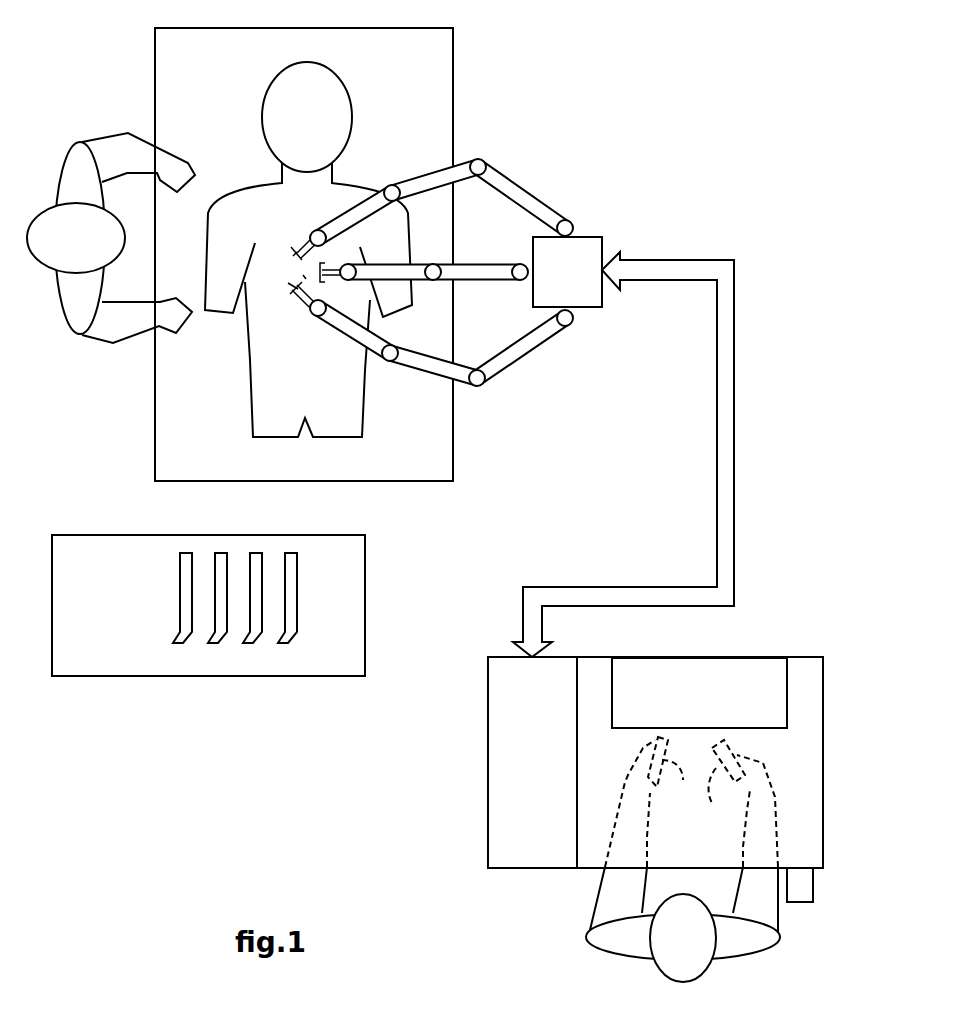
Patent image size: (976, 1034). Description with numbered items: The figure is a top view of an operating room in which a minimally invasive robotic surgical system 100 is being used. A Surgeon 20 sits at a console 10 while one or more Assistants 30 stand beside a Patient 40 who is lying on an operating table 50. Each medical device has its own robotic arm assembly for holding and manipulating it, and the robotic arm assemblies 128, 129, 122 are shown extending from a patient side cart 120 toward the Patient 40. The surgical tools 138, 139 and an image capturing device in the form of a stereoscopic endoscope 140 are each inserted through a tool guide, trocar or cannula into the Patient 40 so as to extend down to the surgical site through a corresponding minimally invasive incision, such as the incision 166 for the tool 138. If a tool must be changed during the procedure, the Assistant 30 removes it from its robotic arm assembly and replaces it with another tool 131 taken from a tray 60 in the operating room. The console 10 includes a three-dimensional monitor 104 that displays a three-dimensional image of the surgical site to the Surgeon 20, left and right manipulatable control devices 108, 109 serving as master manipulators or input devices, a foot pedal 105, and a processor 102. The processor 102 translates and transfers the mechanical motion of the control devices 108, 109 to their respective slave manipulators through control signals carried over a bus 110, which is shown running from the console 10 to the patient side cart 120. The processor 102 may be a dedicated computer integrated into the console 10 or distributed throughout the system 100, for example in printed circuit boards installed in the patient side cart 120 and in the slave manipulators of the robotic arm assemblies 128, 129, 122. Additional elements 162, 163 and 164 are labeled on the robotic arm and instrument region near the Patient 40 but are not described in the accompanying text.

The console 10 is at (798, 657).
The Surgeon 20 is at (737, 960).
The Assistant 30 is at (58, 299).
The Patient 40 is at (252, 186).
The operating table 50 is at (381, 27).
The tray 60 is at (85, 535).
The minimally invasive robotic surgical system 100 is at (652, 107).
The processor 102 is at (550, 773).
The 3-D monitor 104 is at (715, 704).
The foot pedal 105 is at (805, 903).
The left manipulatable control device 108 is at (651, 802).
The right manipulatable control device 109 is at (739, 803).
The bus 110 is at (717, 540).
The patient side cart 120 is at (584, 283).
The robotic arm assembly 122 is at (467, 250).
The robotic arm assembly 128 is at (463, 345).
The robotic arm assembly 129 is at (508, 155).
The tool 131 is at (171, 608).
The surgical tool 138 is at (296, 304).
The surgical tool 139 is at (299, 232).
The stereoscopic endoscope 140 is at (332, 260).
The arm link 162 is at (431, 380).
The arm link 163 is at (387, 372).
The instrument joint 164 is at (310, 325).
The incision 166 is at (290, 283).